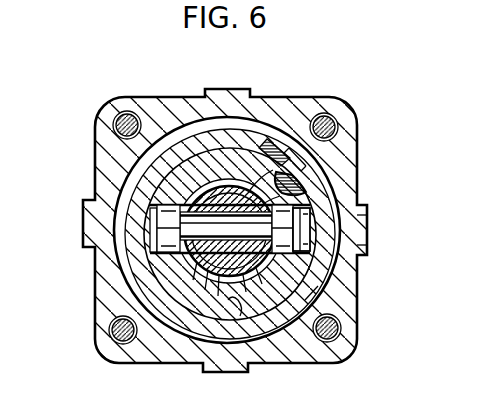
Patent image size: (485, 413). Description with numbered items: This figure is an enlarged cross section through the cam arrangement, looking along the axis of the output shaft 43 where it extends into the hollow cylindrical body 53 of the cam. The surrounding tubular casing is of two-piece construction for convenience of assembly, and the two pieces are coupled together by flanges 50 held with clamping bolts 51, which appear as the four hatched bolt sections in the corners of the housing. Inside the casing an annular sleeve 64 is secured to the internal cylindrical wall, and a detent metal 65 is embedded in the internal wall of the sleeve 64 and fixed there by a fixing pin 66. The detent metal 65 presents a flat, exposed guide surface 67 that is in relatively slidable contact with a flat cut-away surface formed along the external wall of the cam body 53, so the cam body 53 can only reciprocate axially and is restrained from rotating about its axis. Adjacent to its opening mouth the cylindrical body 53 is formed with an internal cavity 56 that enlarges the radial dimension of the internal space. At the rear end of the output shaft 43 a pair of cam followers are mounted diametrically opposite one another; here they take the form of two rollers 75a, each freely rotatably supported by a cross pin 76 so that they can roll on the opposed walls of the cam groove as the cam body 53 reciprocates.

The output shaft 43 is at (167, 160).
The flanges 50 is at (358, 151).
The clamping bolts 51 is at (131, 116).
The cylindrical body 53 is at (210, 204).
The internal cavity 56 is at (238, 305).
The annular sleeve 64 is at (137, 183).
The detent metal 65 is at (312, 198).
The fixing pin 66 is at (305, 177).
The guide surface 67 is at (366, 228).
The rollers 75a is at (170, 242).
The cross pin 76 is at (266, 140).